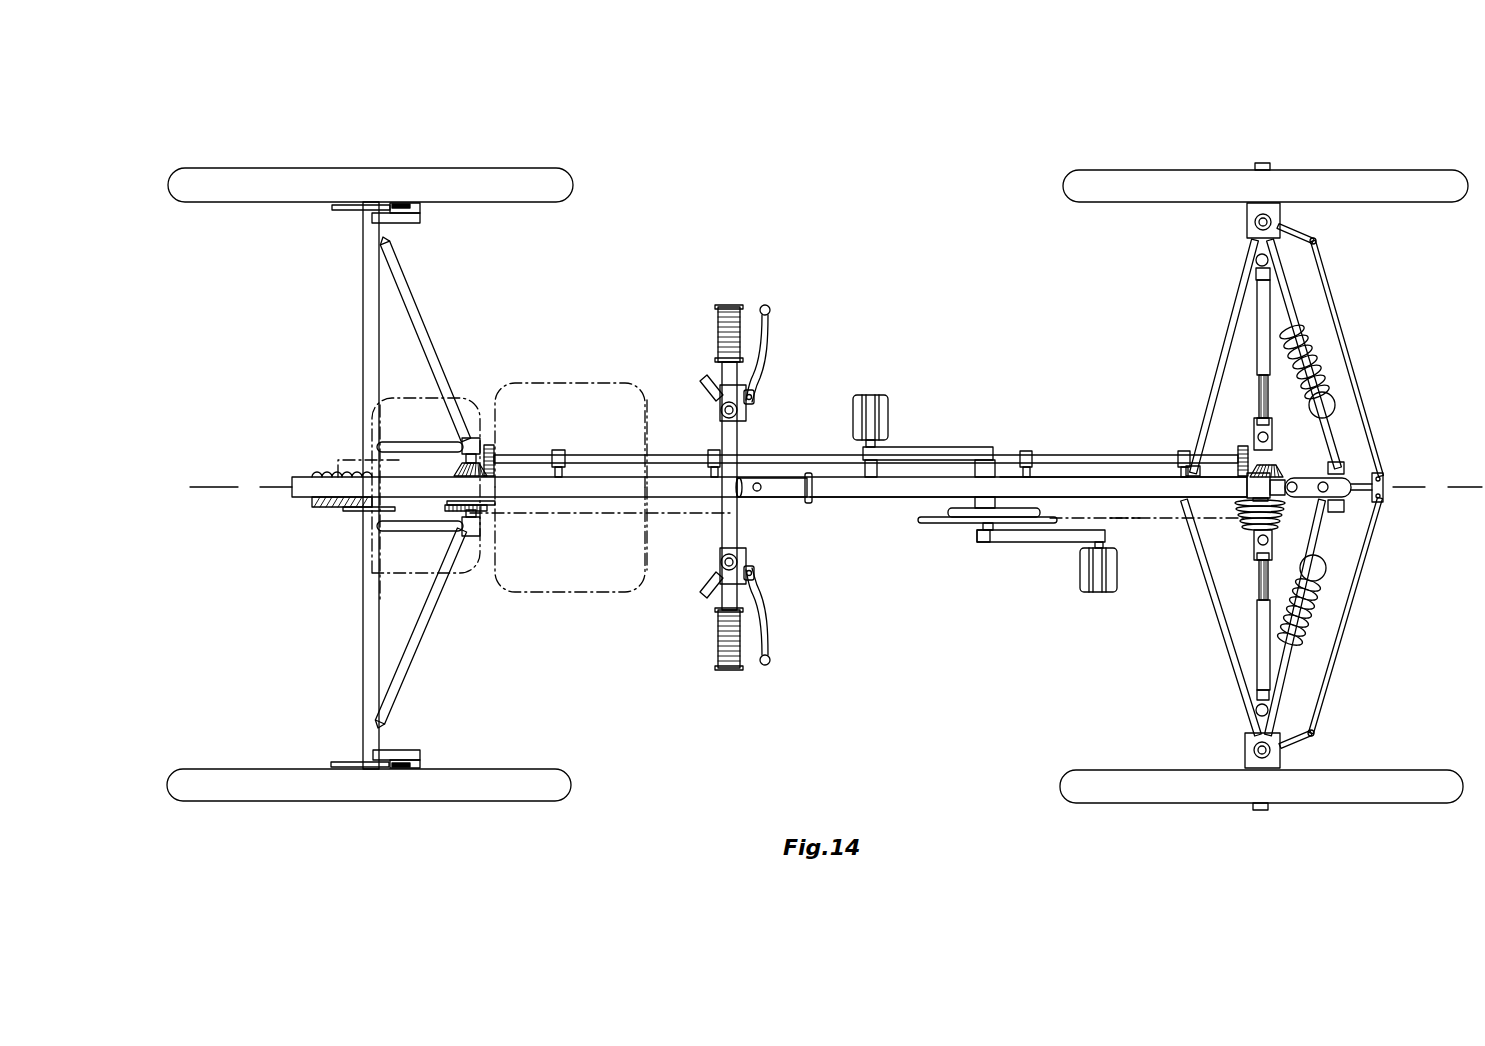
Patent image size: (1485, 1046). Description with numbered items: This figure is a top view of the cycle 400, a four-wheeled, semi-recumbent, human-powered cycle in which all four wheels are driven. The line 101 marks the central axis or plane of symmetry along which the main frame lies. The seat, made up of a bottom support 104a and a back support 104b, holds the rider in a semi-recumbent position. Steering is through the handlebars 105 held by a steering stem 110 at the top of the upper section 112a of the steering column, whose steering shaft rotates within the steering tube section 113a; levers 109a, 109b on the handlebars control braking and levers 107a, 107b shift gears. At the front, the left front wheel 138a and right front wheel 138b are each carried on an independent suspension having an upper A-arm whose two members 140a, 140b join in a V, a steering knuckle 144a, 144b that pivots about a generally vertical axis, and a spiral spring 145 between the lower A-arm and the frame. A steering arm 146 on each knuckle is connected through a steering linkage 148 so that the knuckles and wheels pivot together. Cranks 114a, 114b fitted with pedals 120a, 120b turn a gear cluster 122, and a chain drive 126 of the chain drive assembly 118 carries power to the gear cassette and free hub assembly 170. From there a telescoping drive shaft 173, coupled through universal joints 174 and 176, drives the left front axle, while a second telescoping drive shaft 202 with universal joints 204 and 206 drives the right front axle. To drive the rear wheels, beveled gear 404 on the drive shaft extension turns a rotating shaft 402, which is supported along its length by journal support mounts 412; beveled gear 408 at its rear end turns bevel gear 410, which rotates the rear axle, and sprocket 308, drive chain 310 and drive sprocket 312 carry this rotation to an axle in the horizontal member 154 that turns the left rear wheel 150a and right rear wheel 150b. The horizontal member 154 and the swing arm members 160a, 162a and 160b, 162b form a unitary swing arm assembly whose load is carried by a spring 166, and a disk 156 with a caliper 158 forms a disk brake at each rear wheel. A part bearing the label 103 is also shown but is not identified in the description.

The cycle 400 is at (898, 225).
The central axis line 101 is at (258, 486).
The main axle 103 is at (705, 499).
The bottom support 104a is at (585, 382).
The back support 104b is at (570, 592).
The handlebars 105 is at (738, 527).
The lever 107a is at (704, 379).
The lever 107b is at (704, 590).
The lever 109a is at (768, 340).
The lever 109b is at (768, 632).
The steering stem 110 is at (770, 478).
The upper section of steering column 112a is at (1063, 474).
The steering tube section 113a is at (832, 498).
The crank 114a is at (950, 447).
The crank 114b is at (1030, 543).
The chain drive assembly 118 is at (1131, 535).
The pedal 120a is at (890, 408).
The pedal 120b is at (1082, 580).
The gear cluster 122 is at (938, 526).
The chain drive 126 is at (1090, 518).
The left front wheel 138a is at (1318, 170).
The right front wheel 138b is at (1318, 803).
The upper A-arm member 140a is at (1292, 312).
The upper A-arm member 140b is at (1225, 338).
The steering knuckle 144a is at (1247, 218).
The steering knuckle 144b is at (1245, 757).
The spiral spring 145 is at (1320, 360).
The steering arm 146 is at (1300, 233).
The steering linkage 148 is at (1325, 265).
The left rear wheel 150a is at (420, 168).
The right rear wheel 150b is at (420, 802).
The horizontal member 154 is at (363, 650).
The disk 156 is at (348, 211).
The caliper 158 is at (425, 222).
The swing arm member 160a is at (415, 330).
The swing arm member 160b is at (430, 625).
The swing arm member 162a is at (385, 440).
The swing arm member 162b is at (385, 531).
The spring 166 is at (318, 466).
The gear cassette and free hub assembly 170 is at (1295, 520).
The telescoping drive shaft 173 is at (1258, 320).
The universal joint 174 is at (1248, 445).
The universal joint 176 is at (1254, 273).
The second telescoping drive shaft 202 is at (1257, 653).
The universal joint 204 is at (1250, 537).
The universal joint 206 is at (1250, 700).
The sprocket 308 is at (482, 512).
The drive chain 310 is at (447, 513).
The drive sprocket 312 is at (343, 509).
The rotating shaft 402 is at (1125, 455).
The beveled gear 404 is at (1285, 470).
The beveled gear 408 is at (487, 446).
The bevel gear 410 is at (455, 468).
The journal support mounts 412 is at (556, 450).